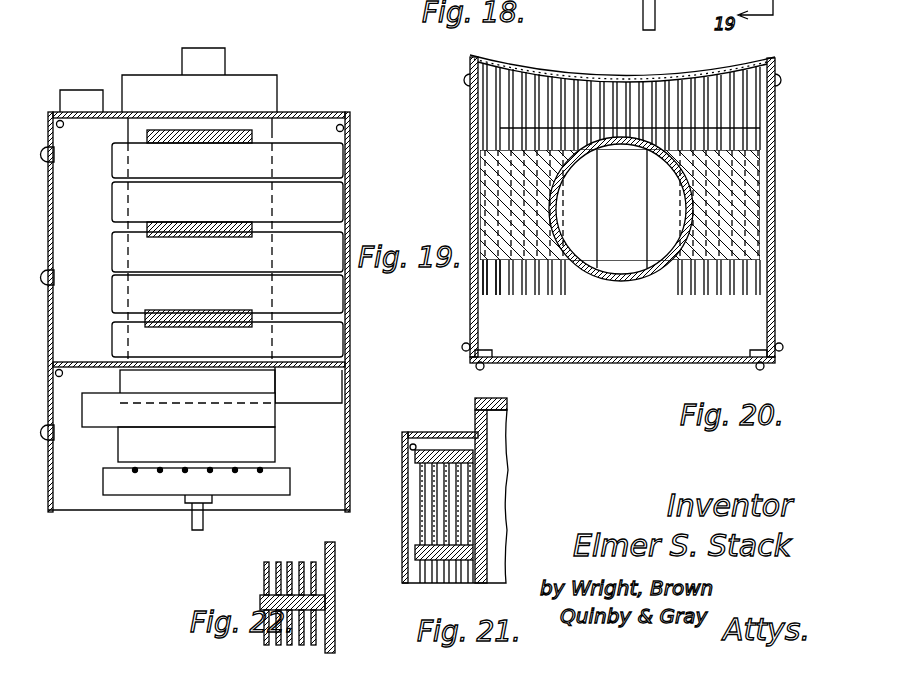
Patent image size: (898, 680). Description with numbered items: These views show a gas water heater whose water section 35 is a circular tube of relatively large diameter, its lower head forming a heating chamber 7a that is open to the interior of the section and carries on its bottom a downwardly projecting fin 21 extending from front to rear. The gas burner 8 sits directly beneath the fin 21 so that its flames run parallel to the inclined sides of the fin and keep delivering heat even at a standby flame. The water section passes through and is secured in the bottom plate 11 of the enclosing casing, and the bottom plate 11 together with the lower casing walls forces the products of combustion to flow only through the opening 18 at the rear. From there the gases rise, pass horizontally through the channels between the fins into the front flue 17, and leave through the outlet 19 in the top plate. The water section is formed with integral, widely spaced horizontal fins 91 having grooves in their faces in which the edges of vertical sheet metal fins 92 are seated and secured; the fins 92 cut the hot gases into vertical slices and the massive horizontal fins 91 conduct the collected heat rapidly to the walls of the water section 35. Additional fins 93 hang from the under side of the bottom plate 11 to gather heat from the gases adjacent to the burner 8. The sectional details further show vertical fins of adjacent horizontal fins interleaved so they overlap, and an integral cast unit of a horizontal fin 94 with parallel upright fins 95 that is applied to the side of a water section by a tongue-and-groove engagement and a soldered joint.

In FIG. 20, the heating chamber 7a is at (625, 237).
In FIG. 19, the gas burner 8 is at (110, 480).
In FIG. 19, the bottom plate 11 is at (83, 362).
In FIG. 19, the upright space or flue 17 is at (75, 206).
In FIG. 20, the upright space or flue 17 is at (677, 338).
In FIG. 19, the opening 18 is at (297, 367).
In FIG. 20, the opening 18 is at (567, 100).
In FIG. 19, the outlet 19 is at (81, 104).
In FIG. 19, the fin 21 is at (265, 462).
In FIG. 19, the water section 35 is at (138, 128).
In FIG. 20, the water section 35 is at (609, 281).
In FIG. 21, the water section 35 is at (490, 443).
In FIG. 22, the water section 35 is at (335, 630).
In FIG. 19, the horizontal fins 91 is at (255, 132).
In FIG. 20, the horizontal fins 91 is at (503, 183).
In FIG. 21, the horizontal fins 91 is at (445, 452).
In FIG. 19, the sheet metal fins 92 is at (325, 205).
In FIG. 20, the sheet metal fins 92 is at (557, 292).
In FIG. 21, the sheet metal fins 92 is at (438, 510).
In FIG. 19, the fins 93 is at (327, 398).
In FIG. 22, the horizontal fin 94 is at (265, 600).
In FIG. 22, the vertical fins 95 is at (313, 562).